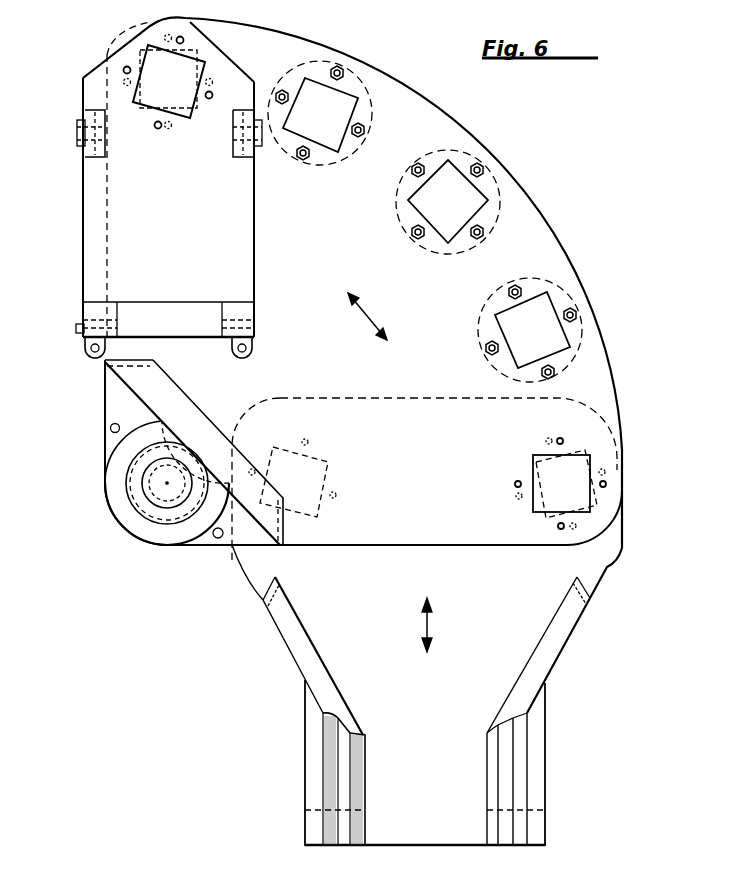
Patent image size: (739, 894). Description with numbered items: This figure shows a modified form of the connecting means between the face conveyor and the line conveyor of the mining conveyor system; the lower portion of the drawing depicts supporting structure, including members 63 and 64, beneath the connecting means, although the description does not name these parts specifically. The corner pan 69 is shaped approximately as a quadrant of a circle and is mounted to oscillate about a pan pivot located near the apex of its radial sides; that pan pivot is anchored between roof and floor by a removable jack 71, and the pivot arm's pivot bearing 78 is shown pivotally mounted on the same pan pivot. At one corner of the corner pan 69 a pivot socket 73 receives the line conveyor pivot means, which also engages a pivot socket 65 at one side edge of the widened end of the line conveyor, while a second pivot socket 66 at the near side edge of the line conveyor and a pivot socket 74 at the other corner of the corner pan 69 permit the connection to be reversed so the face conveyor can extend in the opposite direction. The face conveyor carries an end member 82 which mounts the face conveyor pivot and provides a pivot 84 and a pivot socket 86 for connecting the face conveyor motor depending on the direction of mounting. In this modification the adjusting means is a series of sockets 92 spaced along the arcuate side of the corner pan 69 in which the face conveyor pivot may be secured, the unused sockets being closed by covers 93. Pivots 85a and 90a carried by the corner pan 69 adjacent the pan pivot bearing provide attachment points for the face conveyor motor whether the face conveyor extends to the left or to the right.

The support column 63 is at (535, 752).
The inclined arm 64 is at (605, 560).
The pivot socket 65 is at (603, 495).
The pivot socket 66 is at (317, 513).
The corner pan 69 is at (540, 233).
The removable jack 71 is at (152, 500).
The pivot socket 73 is at (593, 462).
The pivot socket 74 is at (197, 70).
The pivot bearing 78 is at (112, 480).
The end member 82 is at (113, 247).
The pivot 84 is at (257, 347).
The pivot 85a is at (110, 430).
The pivot socket 86 is at (85, 348).
The pivot 90a is at (216, 540).
The sockets 92 is at (346, 94).
The covers 93 is at (320, 61).